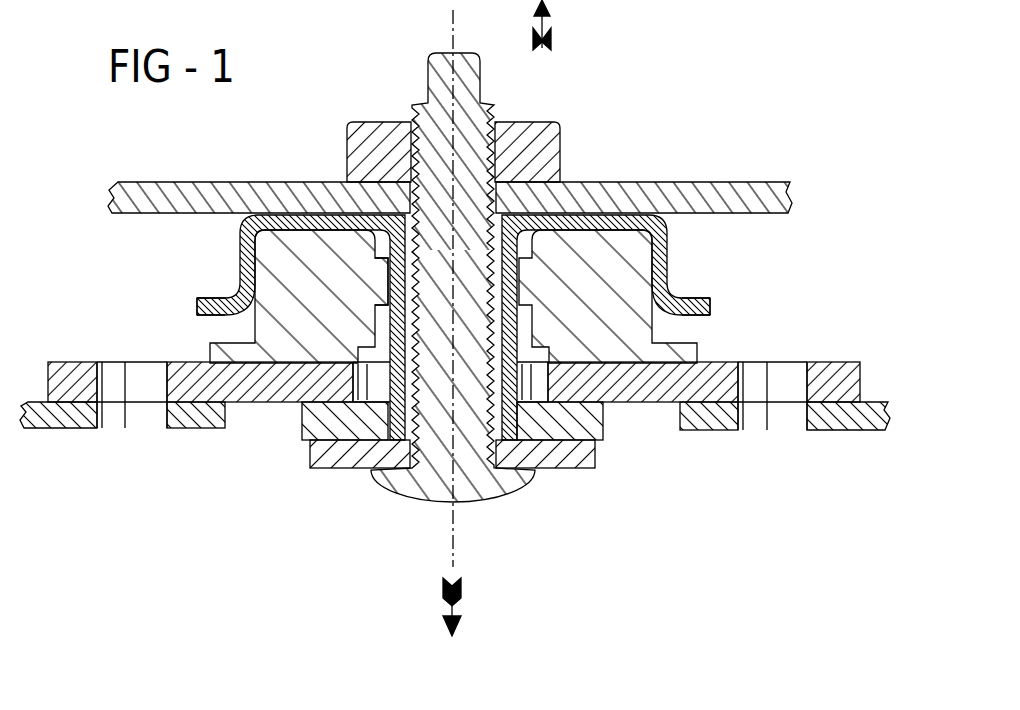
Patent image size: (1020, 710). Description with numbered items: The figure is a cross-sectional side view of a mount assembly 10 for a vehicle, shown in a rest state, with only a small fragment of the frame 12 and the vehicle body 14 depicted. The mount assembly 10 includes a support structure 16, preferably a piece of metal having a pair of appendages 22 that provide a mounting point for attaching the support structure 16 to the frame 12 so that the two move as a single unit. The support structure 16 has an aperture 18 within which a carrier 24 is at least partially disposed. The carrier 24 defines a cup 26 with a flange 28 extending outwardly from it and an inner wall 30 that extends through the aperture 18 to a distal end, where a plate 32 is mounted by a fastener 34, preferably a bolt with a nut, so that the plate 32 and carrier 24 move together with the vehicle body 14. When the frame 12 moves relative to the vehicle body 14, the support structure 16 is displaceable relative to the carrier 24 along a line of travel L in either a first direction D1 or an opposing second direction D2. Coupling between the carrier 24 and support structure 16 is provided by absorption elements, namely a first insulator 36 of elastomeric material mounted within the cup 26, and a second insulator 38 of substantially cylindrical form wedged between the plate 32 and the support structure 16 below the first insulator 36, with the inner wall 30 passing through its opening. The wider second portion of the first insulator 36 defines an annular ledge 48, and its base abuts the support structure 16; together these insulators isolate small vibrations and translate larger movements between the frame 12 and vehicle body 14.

The mount assembly 10 is at (108, 287).
The frame 12 is at (56, 426).
The vehicle body 14 is at (706, 182).
The support structure 16 is at (812, 363).
The aperture 18 is at (540, 376).
The appendages 22 is at (77, 380).
The carrier 24 is at (668, 233).
The cup 26 is at (316, 240).
The flange 28 is at (212, 298).
The inner wall 30 is at (375, 347).
The plate 32 is at (580, 468).
The fastener 34 is at (514, 101).
The first insulator 36 is at (607, 271).
The second insulator 38 is at (302, 425).
The ledge 48 is at (690, 340).
The line of travel L is at (452, 27).
The first direction D1 is at (462, 596).
The second direction D2 is at (550, 22).